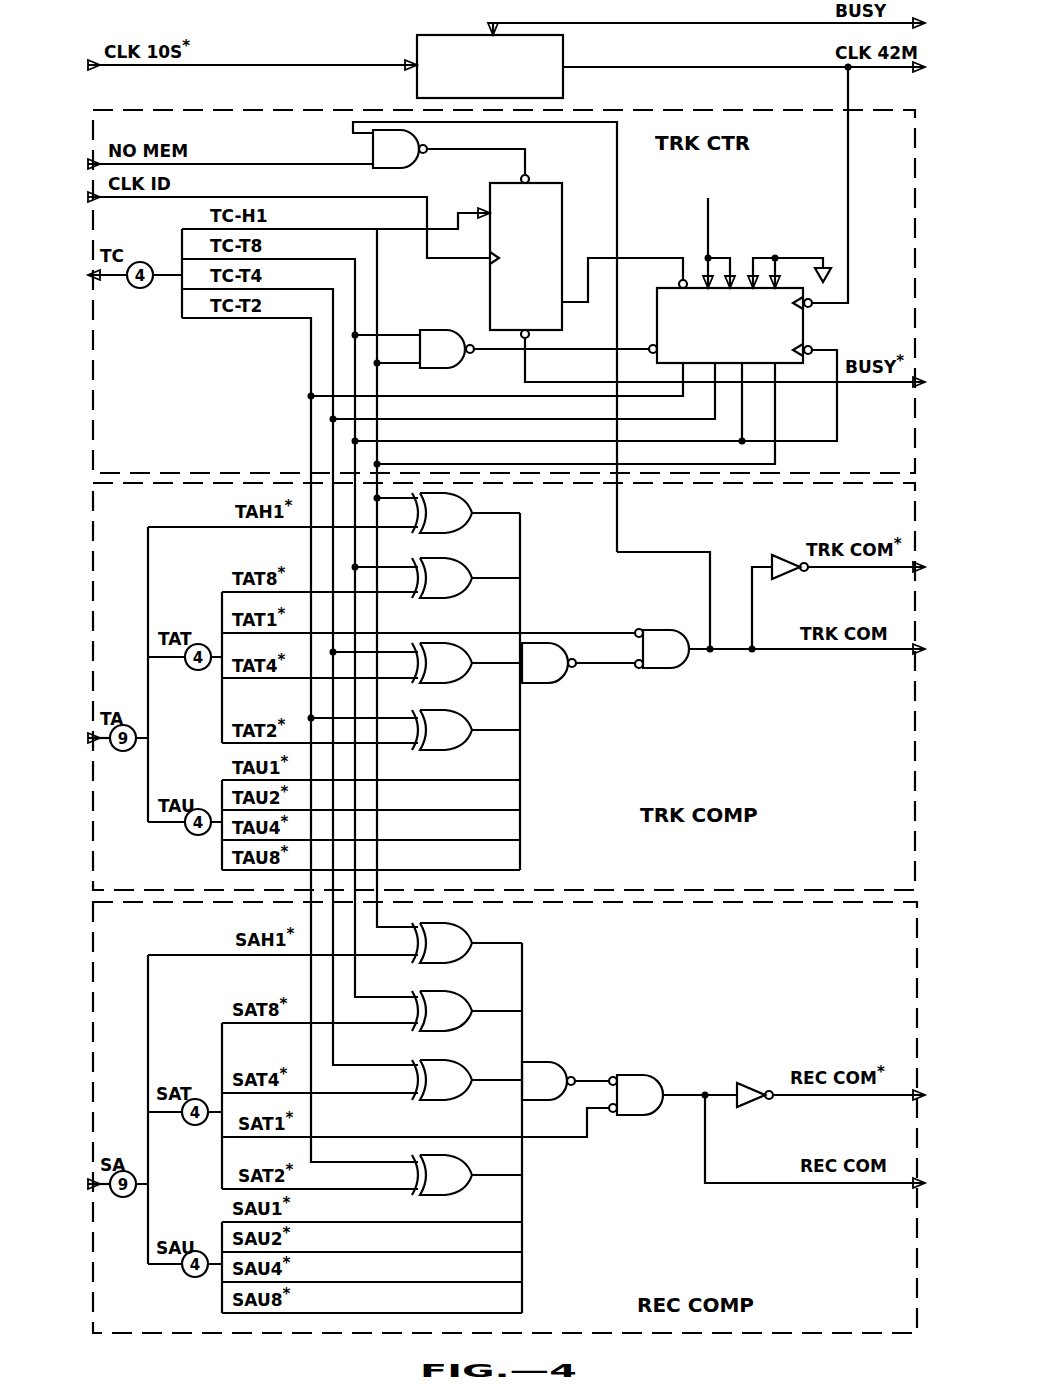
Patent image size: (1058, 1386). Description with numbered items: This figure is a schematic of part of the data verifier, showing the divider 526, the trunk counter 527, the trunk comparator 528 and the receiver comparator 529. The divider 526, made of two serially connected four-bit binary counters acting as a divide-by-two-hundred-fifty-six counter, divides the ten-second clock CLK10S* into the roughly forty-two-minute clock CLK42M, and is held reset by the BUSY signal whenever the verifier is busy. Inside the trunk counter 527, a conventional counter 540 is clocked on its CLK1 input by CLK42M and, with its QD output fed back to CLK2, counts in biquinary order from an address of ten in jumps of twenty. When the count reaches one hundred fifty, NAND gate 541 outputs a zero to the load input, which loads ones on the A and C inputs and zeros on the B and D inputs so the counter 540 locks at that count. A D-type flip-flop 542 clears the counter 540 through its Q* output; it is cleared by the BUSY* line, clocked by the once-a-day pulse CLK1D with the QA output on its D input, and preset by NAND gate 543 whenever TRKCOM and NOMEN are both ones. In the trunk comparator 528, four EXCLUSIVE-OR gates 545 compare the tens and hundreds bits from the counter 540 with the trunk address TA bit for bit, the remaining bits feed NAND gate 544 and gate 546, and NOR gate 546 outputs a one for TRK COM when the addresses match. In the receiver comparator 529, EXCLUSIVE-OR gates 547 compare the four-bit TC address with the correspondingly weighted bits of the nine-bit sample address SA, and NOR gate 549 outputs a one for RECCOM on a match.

The divider 526 is at (445, 44).
The trunk counter 527 is at (110, 112).
The trunk comparator 528 is at (93, 535).
The receiver comparator 529 is at (93, 1000).
The counter 540 is at (741, 288).
The NAND gate 541 is at (433, 330).
The D-type flip-flop 542 is at (560, 185).
The NAND gate 543 is at (413, 150).
The NAND gate 544 is at (551, 677).
The EXCLUSIVE-OR gates 545 is at (458, 510).
The NOR gate 546 is at (670, 665).
The EXCLUSIVE-OR gate 547 is at (455, 940).
The NOR gate 549 is at (640, 1078).